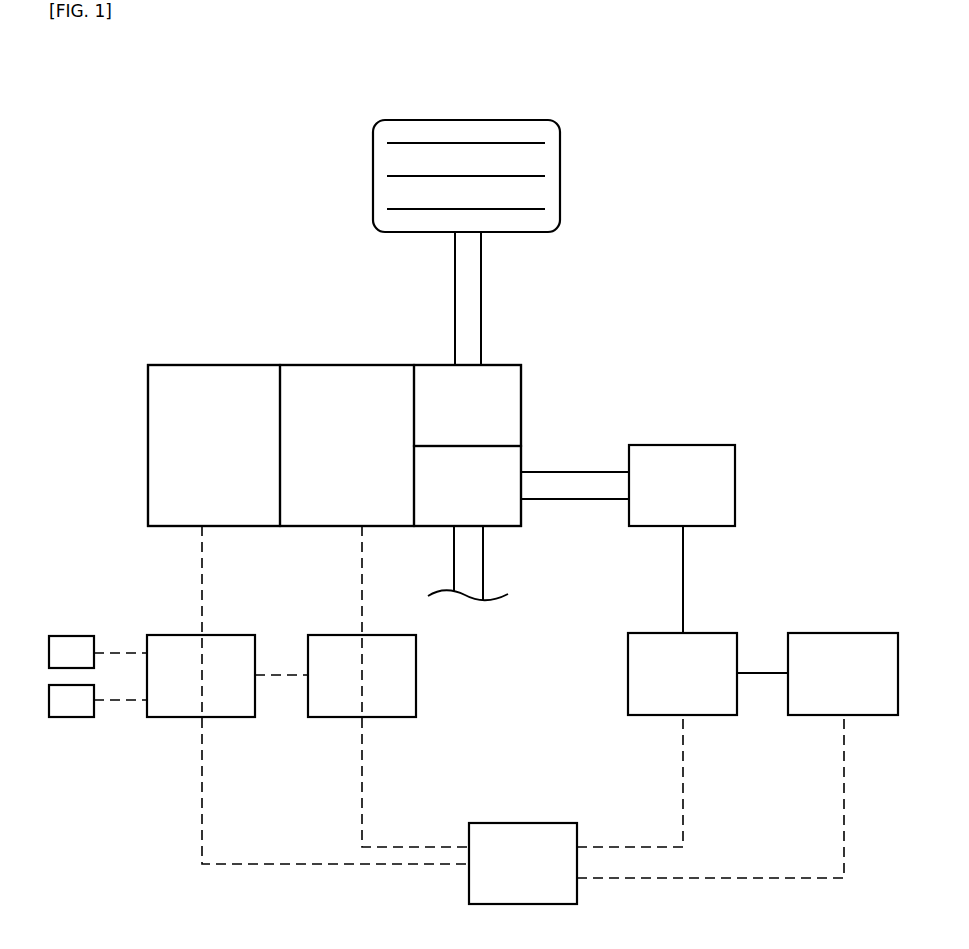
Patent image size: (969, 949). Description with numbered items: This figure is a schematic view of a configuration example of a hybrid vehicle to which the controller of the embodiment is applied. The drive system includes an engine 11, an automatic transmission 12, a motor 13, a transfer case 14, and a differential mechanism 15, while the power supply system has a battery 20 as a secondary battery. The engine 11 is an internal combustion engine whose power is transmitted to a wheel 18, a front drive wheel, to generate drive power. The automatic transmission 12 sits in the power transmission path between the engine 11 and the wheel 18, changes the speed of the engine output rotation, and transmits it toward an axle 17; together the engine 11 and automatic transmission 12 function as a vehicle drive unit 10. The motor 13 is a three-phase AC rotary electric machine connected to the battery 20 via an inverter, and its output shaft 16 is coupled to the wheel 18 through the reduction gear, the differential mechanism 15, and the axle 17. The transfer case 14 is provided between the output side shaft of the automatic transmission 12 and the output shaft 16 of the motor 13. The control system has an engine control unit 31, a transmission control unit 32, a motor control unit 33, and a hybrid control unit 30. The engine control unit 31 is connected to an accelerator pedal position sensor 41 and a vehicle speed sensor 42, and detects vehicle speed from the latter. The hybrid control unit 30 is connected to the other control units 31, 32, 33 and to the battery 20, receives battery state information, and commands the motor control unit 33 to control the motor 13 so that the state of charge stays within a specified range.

The vehicle drive unit 10 is at (200, 303).
The engine 11 is at (210, 365).
The automatic transmission 12 is at (345, 365).
The motor 13 is at (738, 485).
The transfer case 14 is at (503, 530).
The differential mechanism 15 is at (503, 365).
The output shaft 16 is at (572, 472).
The axle 17 is at (483, 266).
The wheel 18 is at (463, 120).
The battery 20 is at (815, 716).
The hybrid control unit (HCU) 30 is at (521, 823).
The engine control unit (ECU) 31 is at (172, 718).
The transmission control unit (TCU) 32 is at (332, 718).
The motor control unit (MCU) 33 is at (655, 716).
The accelerator pedal position sensor 41 is at (70, 636).
The vehicle speed sensor 42 is at (72, 718).